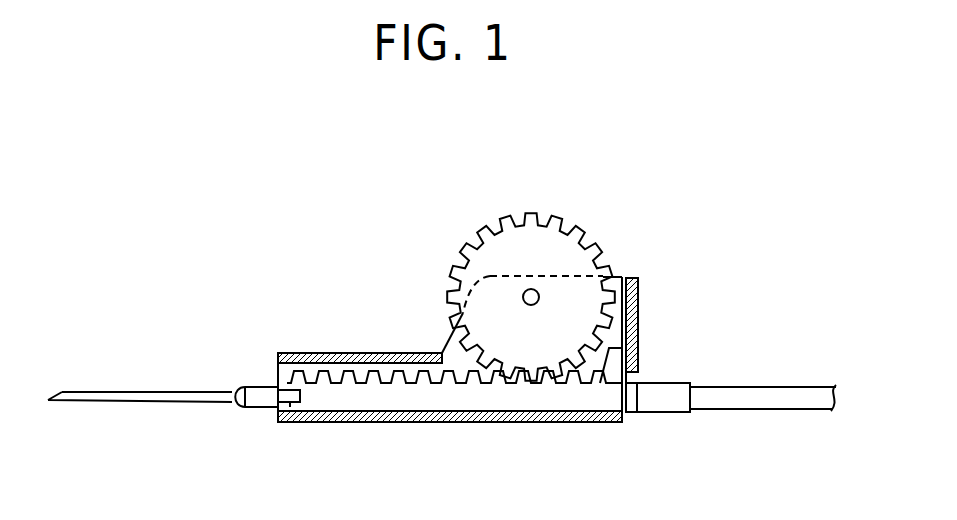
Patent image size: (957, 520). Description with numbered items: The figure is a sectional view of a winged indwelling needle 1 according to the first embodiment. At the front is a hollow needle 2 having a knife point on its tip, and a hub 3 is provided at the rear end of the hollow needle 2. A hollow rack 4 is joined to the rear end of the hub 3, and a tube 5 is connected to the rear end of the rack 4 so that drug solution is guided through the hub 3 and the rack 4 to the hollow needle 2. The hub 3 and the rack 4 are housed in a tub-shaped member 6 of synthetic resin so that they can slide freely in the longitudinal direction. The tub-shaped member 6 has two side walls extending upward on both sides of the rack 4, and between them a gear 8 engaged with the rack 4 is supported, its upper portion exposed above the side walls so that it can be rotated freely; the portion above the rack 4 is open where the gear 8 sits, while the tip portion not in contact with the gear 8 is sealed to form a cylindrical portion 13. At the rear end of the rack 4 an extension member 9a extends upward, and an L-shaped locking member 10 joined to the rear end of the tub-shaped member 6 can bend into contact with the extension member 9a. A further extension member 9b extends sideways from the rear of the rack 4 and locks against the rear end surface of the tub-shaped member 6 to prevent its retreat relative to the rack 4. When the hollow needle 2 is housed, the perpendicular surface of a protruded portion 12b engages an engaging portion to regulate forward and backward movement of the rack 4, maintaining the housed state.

The winged indwelling needle 1 is at (311, 252).
The hollow needle 2 is at (115, 390).
The hub 3 is at (262, 387).
The rack 4 is at (374, 395).
The tube 5 is at (767, 410).
The tub-shaped member 6 is at (531, 424).
The gear 8 is at (423, 256).
The extension member 9a is at (614, 367).
The extension member 9b is at (628, 410).
The locking member 10 is at (640, 294).
The protruded portion 12b is at (283, 423).
The cylindrical portion 13 is at (348, 352).